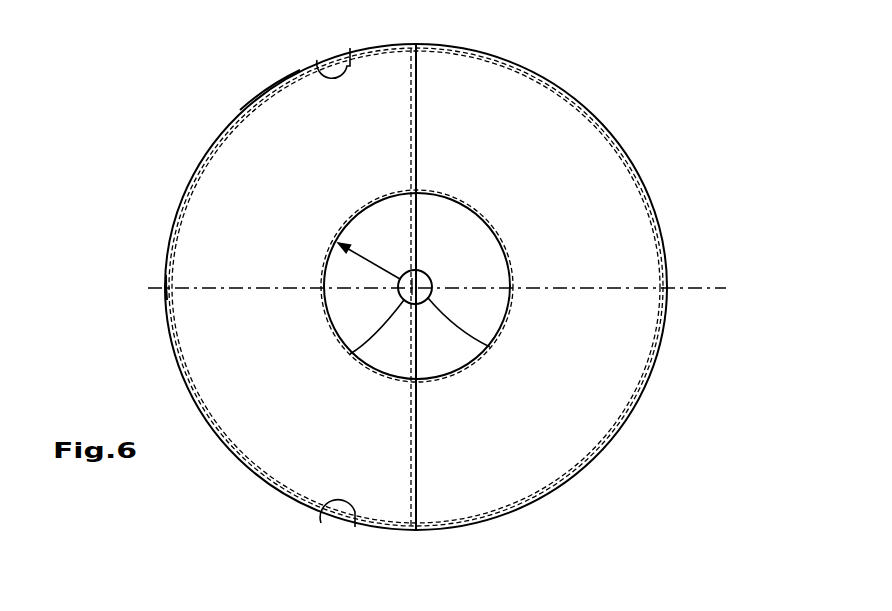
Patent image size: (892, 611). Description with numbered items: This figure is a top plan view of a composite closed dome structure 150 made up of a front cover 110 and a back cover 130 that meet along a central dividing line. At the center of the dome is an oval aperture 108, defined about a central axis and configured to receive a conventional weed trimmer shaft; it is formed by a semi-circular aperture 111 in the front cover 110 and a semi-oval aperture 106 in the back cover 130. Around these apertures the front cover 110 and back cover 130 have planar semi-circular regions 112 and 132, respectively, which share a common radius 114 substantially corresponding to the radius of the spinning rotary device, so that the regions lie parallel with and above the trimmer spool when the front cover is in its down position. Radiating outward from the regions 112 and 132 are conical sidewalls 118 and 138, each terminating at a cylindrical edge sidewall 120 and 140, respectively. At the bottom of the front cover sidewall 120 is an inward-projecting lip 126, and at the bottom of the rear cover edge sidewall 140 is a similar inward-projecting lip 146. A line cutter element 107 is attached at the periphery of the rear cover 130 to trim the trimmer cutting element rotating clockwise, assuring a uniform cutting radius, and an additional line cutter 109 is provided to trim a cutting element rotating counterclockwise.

The semi-oval aperture 106 is at (350, 354).
The line cutter element 107 is at (317, 508).
The oval aperture 108 is at (430, 275).
The additional line cutter 109 is at (317, 65).
The front cover 110 is at (652, 193).
The semi-circular aperture 111 is at (490, 347).
The planar semi-circular region 112 is at (440, 230).
The radius 114 is at (367, 258).
The conical sidewall 118 is at (523, 108).
The cylindrical edge sidewall 120 is at (663, 333).
The lip 126 is at (645, 213).
The back cover 130 is at (165, 351).
The planar semi-circular region 132 is at (385, 232).
The conical sidewall 138 is at (277, 142).
The cylindrical edge sidewall 140 is at (170, 241).
The lip 146 is at (192, 211).
The composite closed dome structure 150 is at (645, 448).